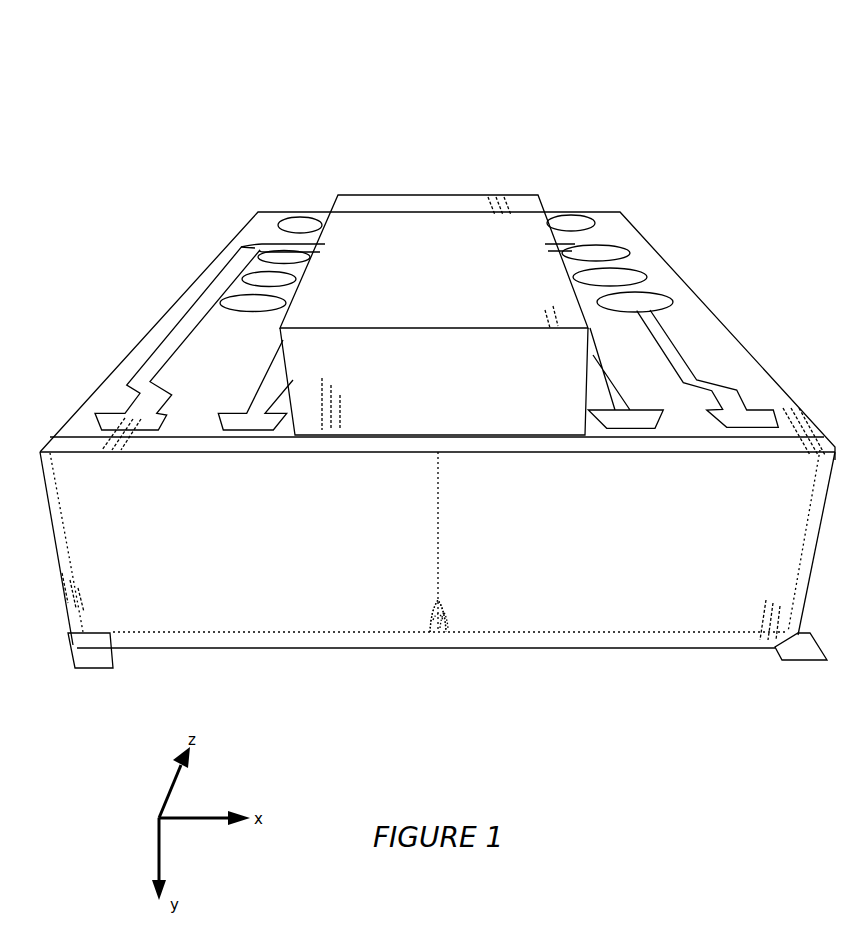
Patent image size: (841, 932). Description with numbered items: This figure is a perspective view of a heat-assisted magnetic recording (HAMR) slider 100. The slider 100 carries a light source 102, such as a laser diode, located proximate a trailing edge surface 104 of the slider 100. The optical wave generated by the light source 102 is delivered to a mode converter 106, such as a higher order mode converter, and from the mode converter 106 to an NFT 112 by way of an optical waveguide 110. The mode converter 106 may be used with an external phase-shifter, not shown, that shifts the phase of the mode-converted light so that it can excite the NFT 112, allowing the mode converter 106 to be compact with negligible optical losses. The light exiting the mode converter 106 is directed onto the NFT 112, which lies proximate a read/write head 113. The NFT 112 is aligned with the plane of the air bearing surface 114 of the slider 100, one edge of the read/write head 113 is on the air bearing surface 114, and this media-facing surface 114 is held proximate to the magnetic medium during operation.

The HAMR slider 100 is at (608, 95).
The light source 102 is at (450, 213).
The trailing edge surface 104 is at (92, 665).
The mode converter 106 is at (437, 633).
The optical waveguide 110 is at (439, 537).
The NFT 112 is at (438, 616).
The read/write head 113 is at (443, 633).
The air bearing surface 114 is at (782, 660).